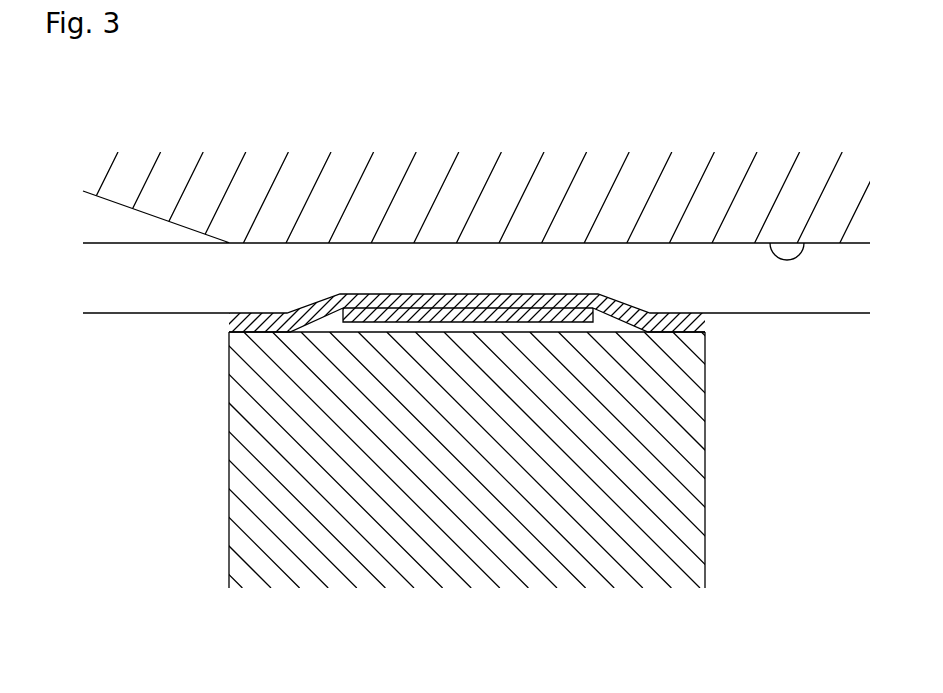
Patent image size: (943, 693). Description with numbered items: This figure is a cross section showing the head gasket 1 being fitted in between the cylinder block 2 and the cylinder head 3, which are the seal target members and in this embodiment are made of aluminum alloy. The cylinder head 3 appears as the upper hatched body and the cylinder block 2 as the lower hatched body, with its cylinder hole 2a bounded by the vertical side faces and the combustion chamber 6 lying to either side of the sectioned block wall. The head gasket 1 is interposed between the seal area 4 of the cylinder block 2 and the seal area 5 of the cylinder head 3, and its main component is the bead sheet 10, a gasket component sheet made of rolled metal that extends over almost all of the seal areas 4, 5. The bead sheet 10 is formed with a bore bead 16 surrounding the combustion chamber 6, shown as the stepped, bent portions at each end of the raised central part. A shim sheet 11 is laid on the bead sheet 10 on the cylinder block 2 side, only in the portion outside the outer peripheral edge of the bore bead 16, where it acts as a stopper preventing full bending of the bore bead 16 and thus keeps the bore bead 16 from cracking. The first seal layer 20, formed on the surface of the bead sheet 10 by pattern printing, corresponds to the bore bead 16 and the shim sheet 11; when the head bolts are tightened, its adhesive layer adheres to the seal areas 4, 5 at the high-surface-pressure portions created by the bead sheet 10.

The head gasket 1 is at (481, 213).
The cylinder block 2 is at (467, 547).
The cylinder hole 2a is at (227, 542).
The cylinder head 3 is at (737, 183).
The seal area 4 is at (673, 313).
The seal area 5 is at (805, 243).
The combustion chamber 6 is at (115, 468).
The bead sheet 10 is at (539, 287).
The shim sheet 11 is at (441, 299).
The bore bead 16 is at (306, 305).
The first seal layer 20 is at (382, 306).